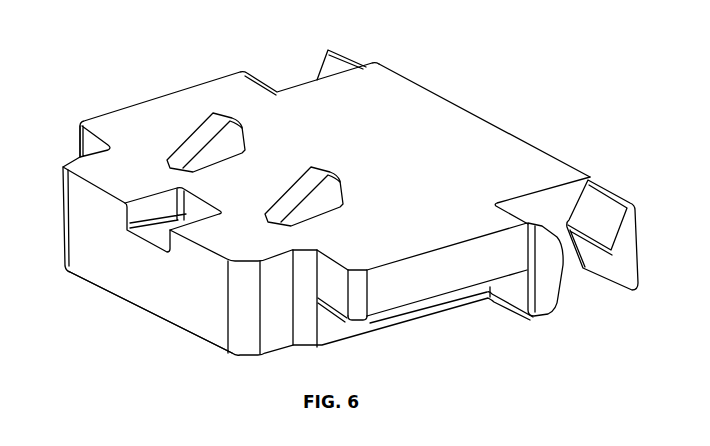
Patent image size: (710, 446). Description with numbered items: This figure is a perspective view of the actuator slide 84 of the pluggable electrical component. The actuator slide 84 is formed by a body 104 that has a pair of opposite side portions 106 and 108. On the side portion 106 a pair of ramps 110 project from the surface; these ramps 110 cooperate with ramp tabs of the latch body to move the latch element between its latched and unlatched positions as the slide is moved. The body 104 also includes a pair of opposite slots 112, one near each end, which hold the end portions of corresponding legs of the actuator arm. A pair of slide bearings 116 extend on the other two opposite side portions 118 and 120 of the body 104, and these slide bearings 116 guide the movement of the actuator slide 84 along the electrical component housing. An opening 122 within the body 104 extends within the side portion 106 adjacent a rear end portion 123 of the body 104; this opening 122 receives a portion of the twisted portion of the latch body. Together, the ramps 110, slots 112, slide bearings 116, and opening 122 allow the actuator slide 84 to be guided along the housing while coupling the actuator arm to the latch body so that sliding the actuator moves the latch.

The actuator slide 84 is at (103, 29).
The body 104 is at (467, 104).
The side portion 106 is at (506, 149).
The side portion 108 is at (406, 341).
The ramps 110 is at (222, 110).
The slots 112 is at (328, 48).
The slide bearings 116 is at (138, 100).
The side portion 118 is at (500, 318).
The side portion 120 is at (199, 62).
The opening 122 is at (133, 218).
The rear end portion 123 is at (165, 342).